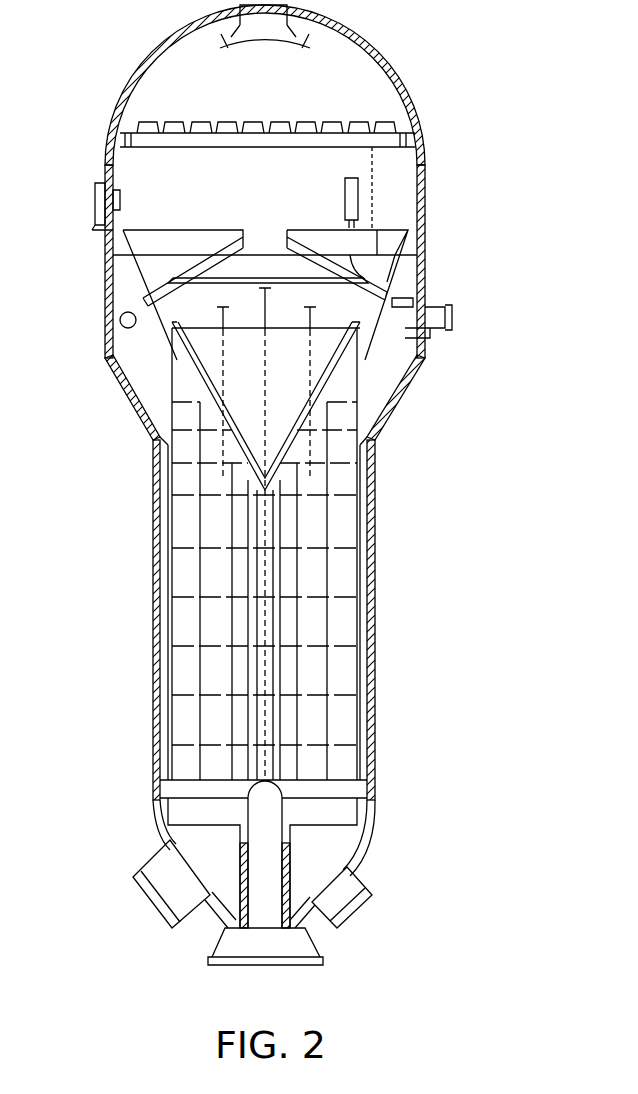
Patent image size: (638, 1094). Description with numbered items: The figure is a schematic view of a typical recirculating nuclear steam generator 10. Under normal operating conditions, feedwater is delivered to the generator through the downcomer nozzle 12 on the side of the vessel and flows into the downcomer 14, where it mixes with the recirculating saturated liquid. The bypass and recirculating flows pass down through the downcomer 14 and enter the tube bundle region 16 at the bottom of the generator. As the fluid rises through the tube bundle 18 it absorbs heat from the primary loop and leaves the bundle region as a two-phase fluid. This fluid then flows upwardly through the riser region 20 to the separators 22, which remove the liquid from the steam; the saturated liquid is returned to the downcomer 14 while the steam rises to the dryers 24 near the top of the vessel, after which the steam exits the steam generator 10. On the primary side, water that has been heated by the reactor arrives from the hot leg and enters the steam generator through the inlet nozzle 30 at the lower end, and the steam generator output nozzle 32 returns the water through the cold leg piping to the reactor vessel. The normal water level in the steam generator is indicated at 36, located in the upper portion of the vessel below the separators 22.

The recirculating steam generator 10 is at (420, 73).
The downcomer nozzle 12 is at (452, 302).
The downcomer 14 is at (365, 584).
The tube bundle region 16 is at (345, 814).
The tube bundle 18 is at (345, 484).
The riser region 20 is at (123, 296).
The separators 22 is at (358, 186).
The dryers 24 is at (410, 100).
The inlet nozzle 30 is at (133, 888).
The steam generator output nozzle 32 is at (372, 898).
The normal water level 36 is at (262, 255).